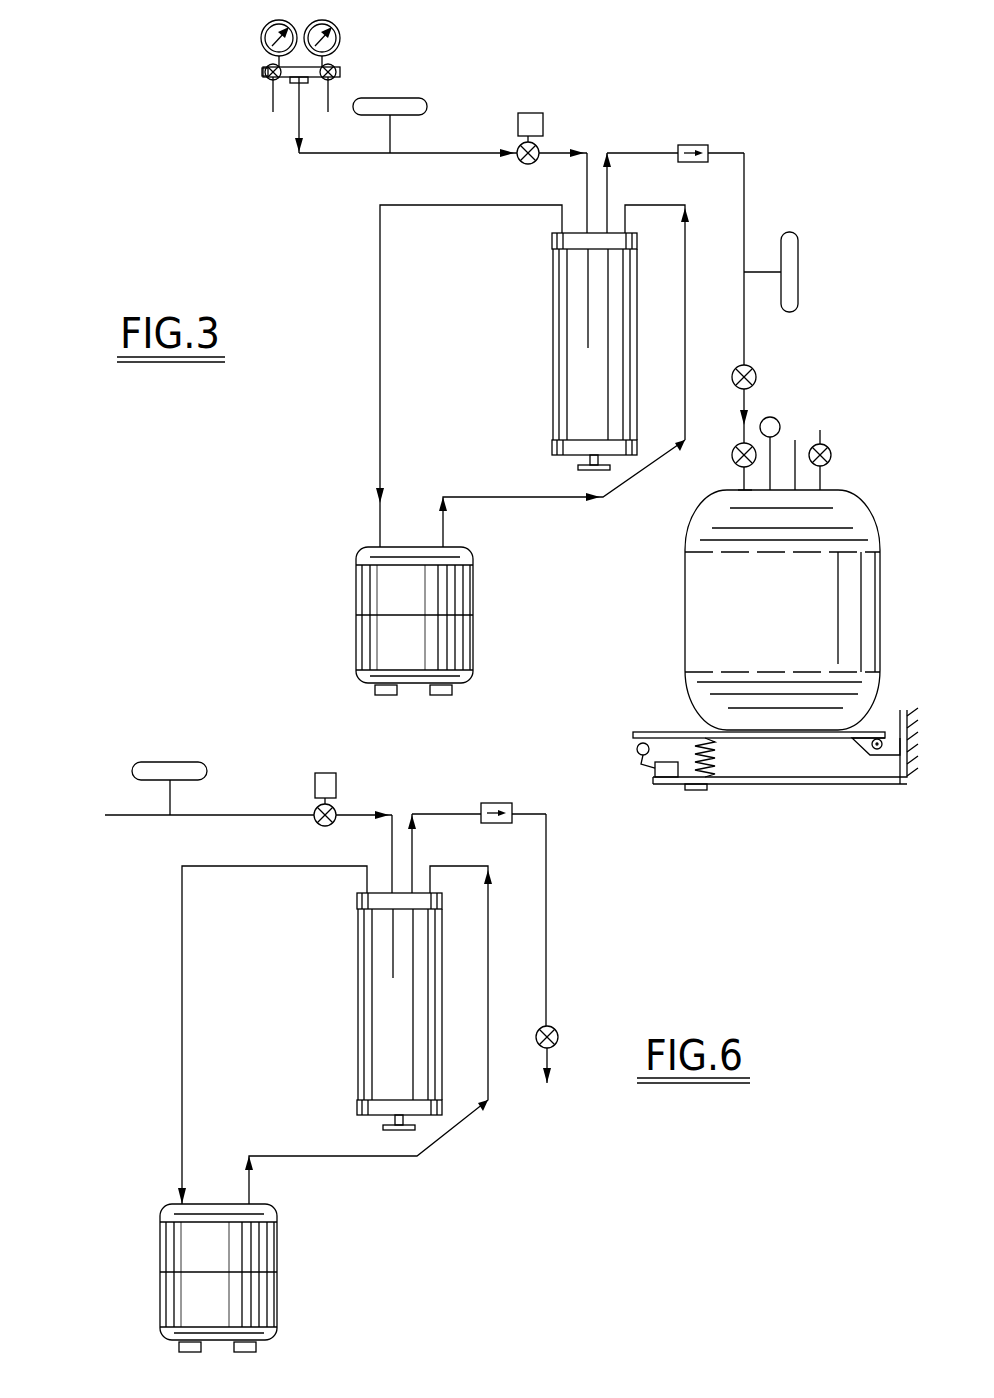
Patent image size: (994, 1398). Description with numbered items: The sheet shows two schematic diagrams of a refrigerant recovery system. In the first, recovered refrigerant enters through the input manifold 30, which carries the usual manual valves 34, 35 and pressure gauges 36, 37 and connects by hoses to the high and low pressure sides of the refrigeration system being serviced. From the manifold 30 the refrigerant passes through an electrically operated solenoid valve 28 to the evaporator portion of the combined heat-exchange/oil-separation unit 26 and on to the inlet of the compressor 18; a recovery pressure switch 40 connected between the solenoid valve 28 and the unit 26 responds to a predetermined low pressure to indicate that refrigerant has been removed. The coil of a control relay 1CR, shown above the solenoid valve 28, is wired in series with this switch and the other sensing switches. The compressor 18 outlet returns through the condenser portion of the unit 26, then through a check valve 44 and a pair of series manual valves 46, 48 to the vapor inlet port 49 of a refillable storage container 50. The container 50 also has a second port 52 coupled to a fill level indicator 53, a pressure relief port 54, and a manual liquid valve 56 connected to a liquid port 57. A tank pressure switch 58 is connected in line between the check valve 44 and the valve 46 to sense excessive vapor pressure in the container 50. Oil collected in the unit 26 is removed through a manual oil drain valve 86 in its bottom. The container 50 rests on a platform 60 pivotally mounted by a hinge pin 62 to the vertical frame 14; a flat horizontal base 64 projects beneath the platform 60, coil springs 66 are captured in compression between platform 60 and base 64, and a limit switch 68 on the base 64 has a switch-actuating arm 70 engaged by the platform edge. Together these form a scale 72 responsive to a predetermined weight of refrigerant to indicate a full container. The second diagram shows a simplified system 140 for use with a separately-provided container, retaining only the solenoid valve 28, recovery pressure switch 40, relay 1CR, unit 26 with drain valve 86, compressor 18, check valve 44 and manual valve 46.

In FIG. 3, the vertical frame 14 is at (902, 710).
In FIG. 3, the compressor 18 is at (350, 580).
In FIG. 6, the compressor 18 is at (278, 1251).
In FIG. 3, the heat-exchange/oil-separation unit 26 is at (549, 322).
In FIG. 6, the heat-exchange/oil-separation unit 26 is at (352, 980).
In FIG. 3, the solenoid valve 28 is at (516, 163).
In FIG. 6, the solenoid valve 28 is at (342, 804).
In FIG. 3, the input manifold 30 is at (345, 68).
In FIG. 3, the manual valve 34 is at (272, 89).
In FIG. 3, the manual valve 35 is at (340, 75).
In FIG. 3, the pressure gauge 36 is at (261, 40).
In FIG. 3, the pressure gauge 37 is at (342, 46).
In FIG. 3, the pressure switch 40 is at (418, 104).
In FIG. 6, the pressure switch 40 is at (205, 765).
In FIG. 3, the control relay 1CR is at (533, 113).
In FIG. 6, the control relay 1CR is at (327, 773).
In FIG. 3, the check valve 44 is at (699, 146).
In FIG. 6, the check valve 44 is at (498, 803).
In FIG. 3, the manual valve 46 is at (752, 368).
In FIG. 6, the manual valve 46 is at (558, 1040).
In FIG. 3, the manual valve 48 is at (738, 446).
In FIG. 3, the vapor inlet port 49 is at (745, 481).
In FIG. 3, the refrigerant storage container 50 is at (679, 597).
In FIG. 3, the second port 52 is at (742, 470).
In FIG. 3, the fill level indicator 53 is at (774, 417).
In FIG. 3, the pressure relief port 54 is at (797, 440).
In FIG. 3, the manual liquid valve 56 is at (831, 450).
In FIG. 3, the liquid port 57 is at (822, 482).
In FIG. 3, the pressure switch 58 is at (802, 262).
In FIG. 3, the platform 60 is at (673, 734).
In FIG. 3, the hinge pin 62 is at (877, 751).
In FIG. 3, the base 64 is at (812, 786).
In FIG. 3, the coil spring 66 is at (718, 768).
In FIG. 3, the limit switch 68 is at (667, 778).
In FIG. 3, the switch-actuating arm 70 is at (640, 763).
In FIG. 3, the scale 72 is at (620, 733).
In FIG. 3, the manual oil drain valve 86 is at (578, 470).
In FIG. 6, the manual oil drain valve 86 is at (383, 1128).
In FIG. 6, the refrigerant recovery system 140 is at (474, 1212).